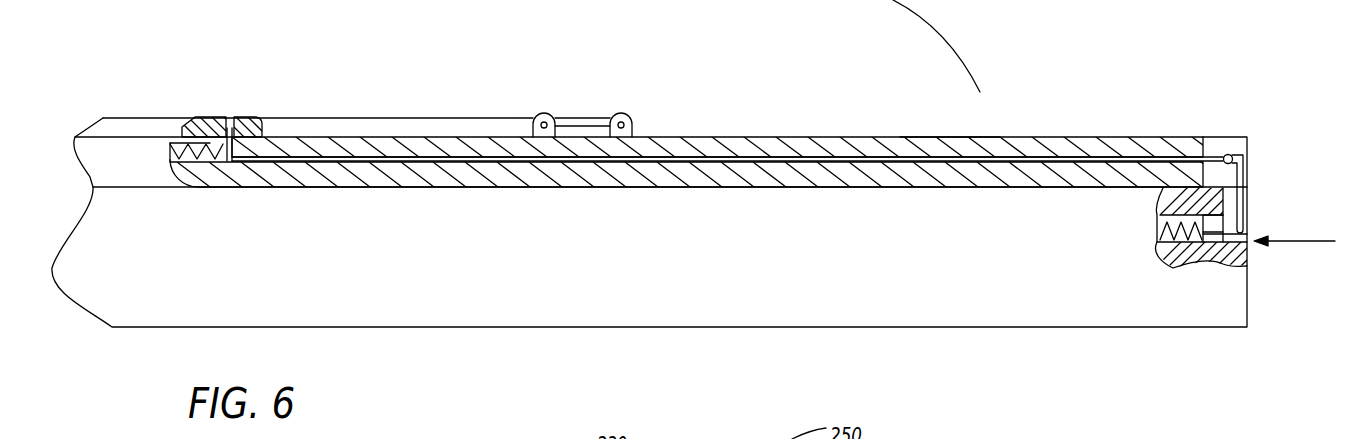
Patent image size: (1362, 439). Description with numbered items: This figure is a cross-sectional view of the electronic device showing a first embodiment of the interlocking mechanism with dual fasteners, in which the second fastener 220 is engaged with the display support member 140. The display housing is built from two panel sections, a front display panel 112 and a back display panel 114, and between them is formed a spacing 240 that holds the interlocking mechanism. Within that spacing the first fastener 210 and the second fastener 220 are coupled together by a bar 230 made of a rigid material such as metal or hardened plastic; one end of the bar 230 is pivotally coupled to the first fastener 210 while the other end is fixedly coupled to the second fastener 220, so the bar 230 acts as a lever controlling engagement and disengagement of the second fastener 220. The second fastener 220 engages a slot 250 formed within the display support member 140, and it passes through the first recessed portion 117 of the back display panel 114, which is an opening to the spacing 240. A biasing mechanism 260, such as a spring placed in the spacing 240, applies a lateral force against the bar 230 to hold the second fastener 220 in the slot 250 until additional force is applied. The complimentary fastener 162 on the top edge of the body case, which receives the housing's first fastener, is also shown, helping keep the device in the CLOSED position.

The front display panel 112 is at (916, 188).
The back display panel 114 is at (946, 137).
The first recessed portion 117 is at (207, 142).
The display support member 140 is at (413, 98).
The complimentary fastener 162 is at (1247, 242).
The first fastener 210 is at (1240, 202).
The second fastener 220 is at (230, 128).
The bar 230 is at (1060, 157).
The spacing 240 is at (838, 155).
The slot 250 is at (208, 130).
The biasing mechanism 260 is at (205, 140).